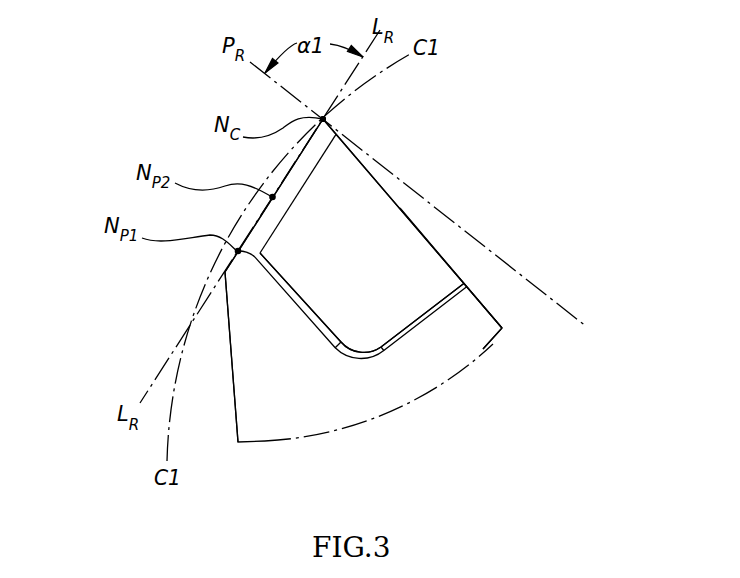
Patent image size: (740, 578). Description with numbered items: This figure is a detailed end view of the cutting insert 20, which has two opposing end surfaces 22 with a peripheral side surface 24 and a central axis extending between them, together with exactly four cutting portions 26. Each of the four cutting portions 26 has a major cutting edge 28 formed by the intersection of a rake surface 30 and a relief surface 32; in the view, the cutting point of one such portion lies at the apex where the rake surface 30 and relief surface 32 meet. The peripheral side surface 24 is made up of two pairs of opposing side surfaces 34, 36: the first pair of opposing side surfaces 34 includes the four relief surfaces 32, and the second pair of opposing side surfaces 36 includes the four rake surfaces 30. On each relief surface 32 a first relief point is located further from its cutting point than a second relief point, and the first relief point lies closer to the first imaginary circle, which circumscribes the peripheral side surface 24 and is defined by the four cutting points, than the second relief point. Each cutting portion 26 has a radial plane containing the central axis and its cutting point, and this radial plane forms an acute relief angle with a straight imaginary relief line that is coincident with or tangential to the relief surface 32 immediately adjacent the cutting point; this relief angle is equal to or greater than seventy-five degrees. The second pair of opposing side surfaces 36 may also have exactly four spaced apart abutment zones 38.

The cutting insert 20 is at (466, 386).
The end surfaces 22 is at (298, 378).
The peripheral side surface 24 is at (484, 300).
The cutting portions 26 is at (349, 263).
The major cutting edge 28 is at (324, 120).
The rake surface 30 is at (400, 208).
The relief surface 32 is at (297, 157).
The first pair of opposing side surfaces 34 is at (231, 357).
The second pair of opposing side surfaces 36 is at (441, 254).
The abutment zones 38 is at (496, 322).